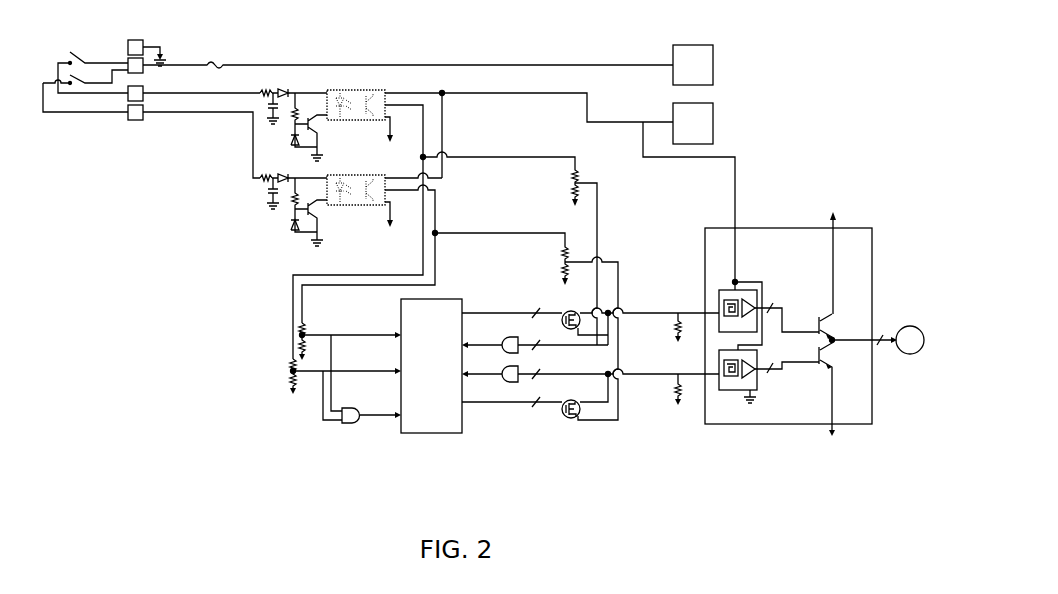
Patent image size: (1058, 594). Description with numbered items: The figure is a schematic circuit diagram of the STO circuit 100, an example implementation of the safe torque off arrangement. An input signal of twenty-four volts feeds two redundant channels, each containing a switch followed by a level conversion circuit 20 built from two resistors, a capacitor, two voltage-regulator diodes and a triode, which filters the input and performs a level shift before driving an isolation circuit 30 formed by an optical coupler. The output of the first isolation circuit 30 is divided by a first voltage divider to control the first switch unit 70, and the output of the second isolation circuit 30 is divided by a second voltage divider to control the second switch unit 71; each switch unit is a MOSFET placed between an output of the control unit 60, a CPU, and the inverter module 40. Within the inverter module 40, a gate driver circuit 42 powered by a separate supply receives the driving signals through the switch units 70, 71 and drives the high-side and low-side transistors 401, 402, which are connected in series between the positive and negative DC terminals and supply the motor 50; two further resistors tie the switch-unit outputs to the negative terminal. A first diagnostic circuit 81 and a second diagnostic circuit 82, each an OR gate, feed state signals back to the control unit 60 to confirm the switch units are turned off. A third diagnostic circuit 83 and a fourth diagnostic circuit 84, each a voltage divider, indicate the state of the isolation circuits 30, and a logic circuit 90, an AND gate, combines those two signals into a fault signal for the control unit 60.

The STO circuit 100 is at (466, 38).
The level conversion circuit 20 is at (268, 139).
The isolation circuit 30 is at (357, 88).
The inverter module 40 is at (768, 228).
The gate driver circuit 42 is at (725, 278).
The motor 50 is at (905, 326).
The control unit 60 is at (430, 433).
The first switch unit 70 is at (565, 312).
The second switch unit 71 is at (563, 417).
The first diagnostic circuit 81 is at (520, 350).
The second diagnostic circuit 82 is at (520, 380).
The third diagnostic circuit 83 is at (285, 371).
The fourth diagnostic circuit 84 is at (296, 334).
The logic circuit 90 is at (351, 424).
The high-side transistor 401 is at (826, 322).
The low-side transistor 402 is at (830, 350).